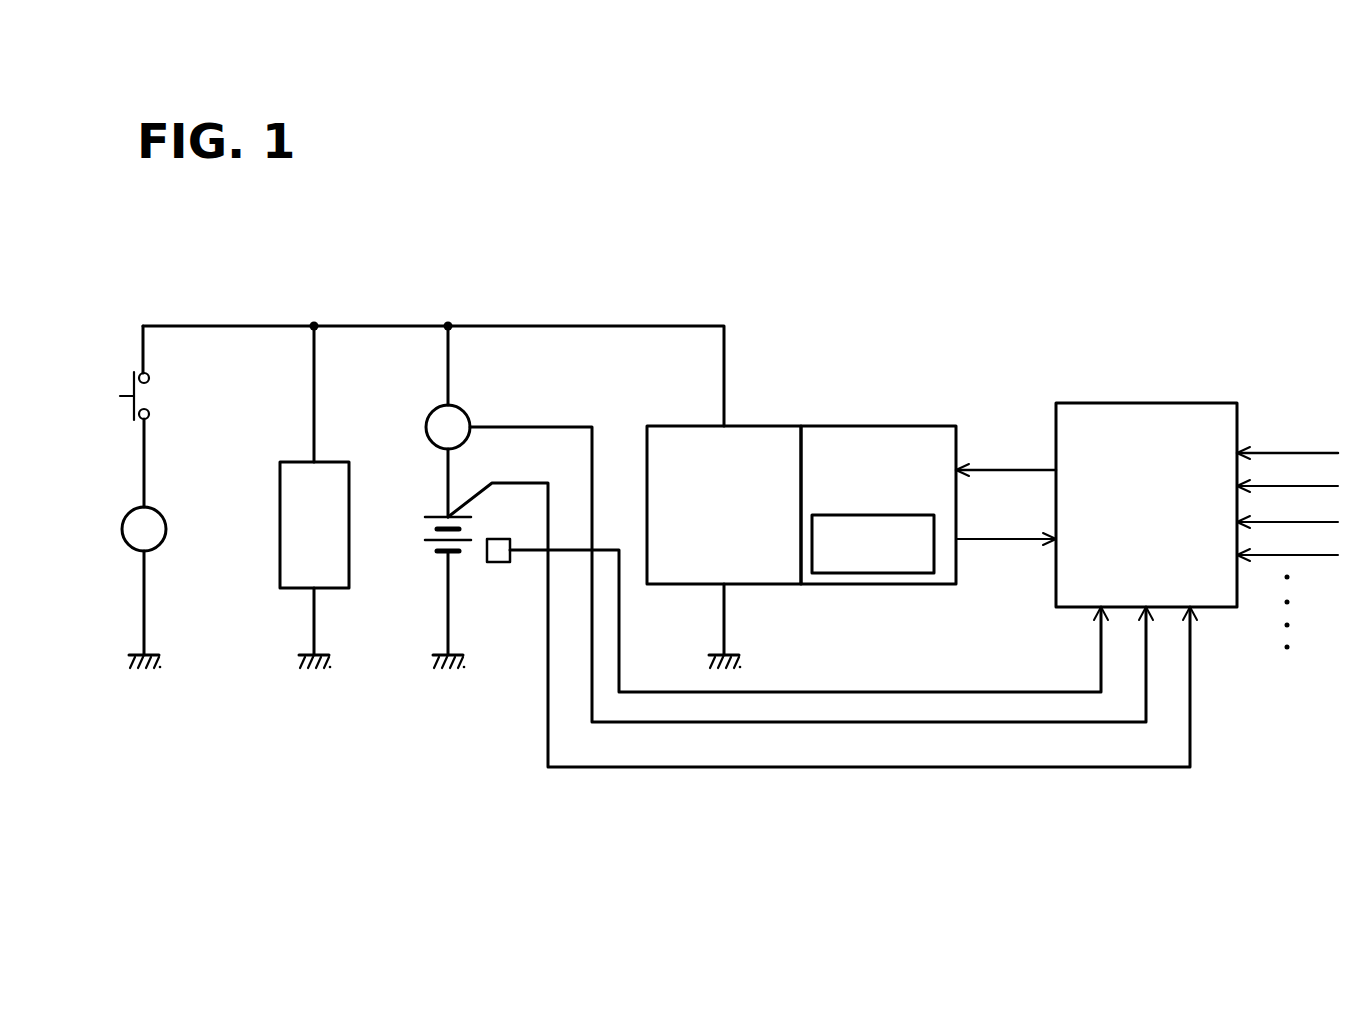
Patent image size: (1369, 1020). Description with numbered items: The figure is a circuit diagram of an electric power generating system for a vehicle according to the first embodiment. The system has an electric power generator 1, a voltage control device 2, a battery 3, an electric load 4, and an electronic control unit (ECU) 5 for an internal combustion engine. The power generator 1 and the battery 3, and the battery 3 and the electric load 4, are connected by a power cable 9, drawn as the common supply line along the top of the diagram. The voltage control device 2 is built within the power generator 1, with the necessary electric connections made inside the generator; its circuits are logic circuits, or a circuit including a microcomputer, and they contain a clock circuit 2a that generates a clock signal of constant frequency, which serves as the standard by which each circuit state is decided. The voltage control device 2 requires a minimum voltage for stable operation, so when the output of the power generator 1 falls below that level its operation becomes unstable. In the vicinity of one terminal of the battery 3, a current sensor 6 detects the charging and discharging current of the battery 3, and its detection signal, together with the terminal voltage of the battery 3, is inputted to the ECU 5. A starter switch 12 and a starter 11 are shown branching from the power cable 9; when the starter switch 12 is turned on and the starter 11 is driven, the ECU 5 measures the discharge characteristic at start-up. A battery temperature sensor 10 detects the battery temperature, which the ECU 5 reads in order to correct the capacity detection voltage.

The electric power generator 1 is at (750, 426).
The voltage control device 2 is at (878, 478).
The clock circuit 2a is at (900, 515).
The battery 3 is at (432, 516).
The electric load 4 is at (334, 462).
The electronic control unit (ECU) 5 is at (1196, 403).
The current sensor 6 is at (464, 412).
The power cable 9 is at (358, 326).
The battery temperature sensor 10 is at (498, 563).
The starter 11 is at (159, 510).
The starter switch 12 is at (152, 395).